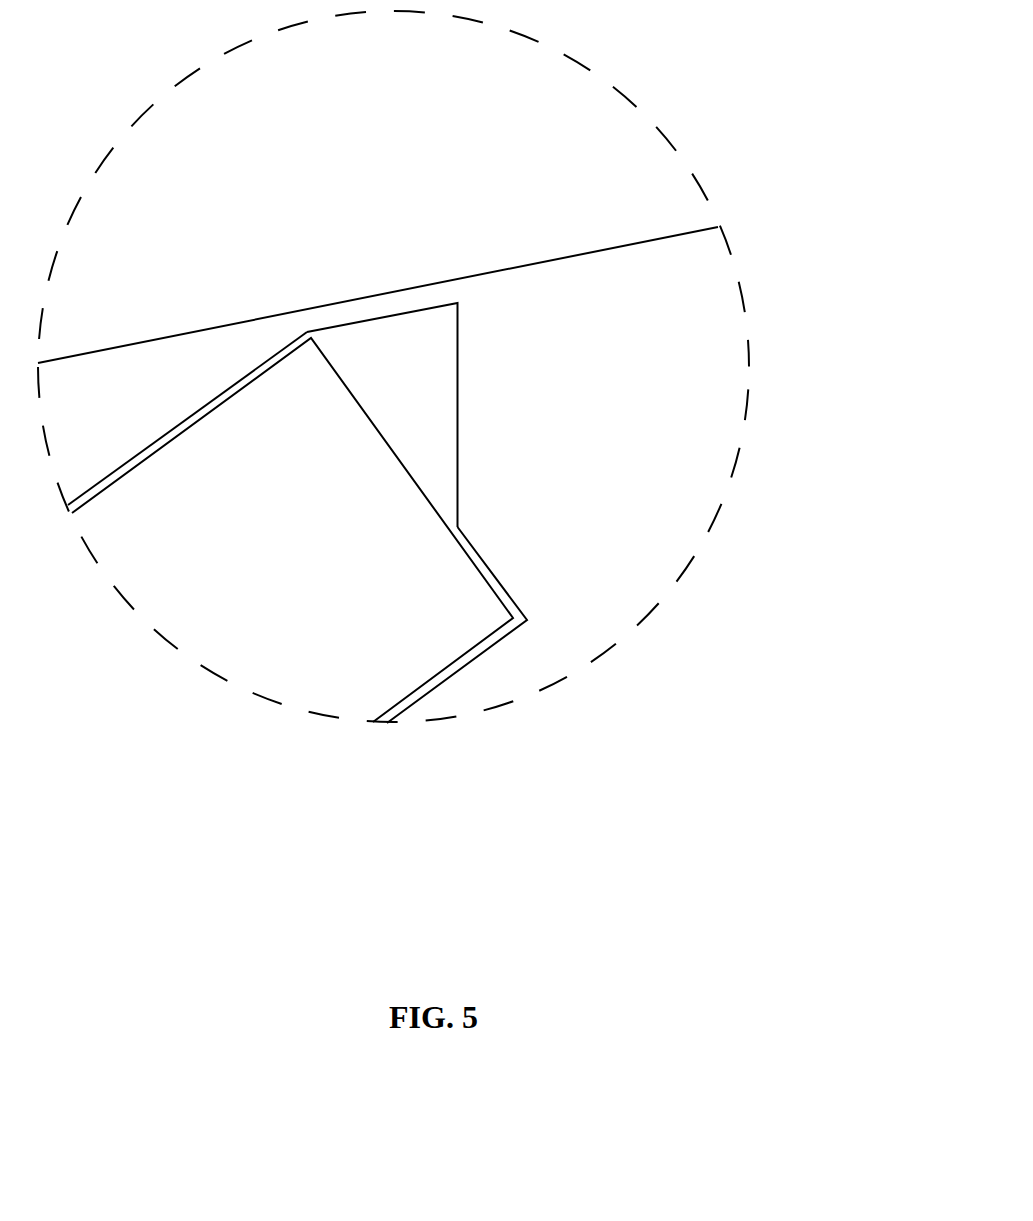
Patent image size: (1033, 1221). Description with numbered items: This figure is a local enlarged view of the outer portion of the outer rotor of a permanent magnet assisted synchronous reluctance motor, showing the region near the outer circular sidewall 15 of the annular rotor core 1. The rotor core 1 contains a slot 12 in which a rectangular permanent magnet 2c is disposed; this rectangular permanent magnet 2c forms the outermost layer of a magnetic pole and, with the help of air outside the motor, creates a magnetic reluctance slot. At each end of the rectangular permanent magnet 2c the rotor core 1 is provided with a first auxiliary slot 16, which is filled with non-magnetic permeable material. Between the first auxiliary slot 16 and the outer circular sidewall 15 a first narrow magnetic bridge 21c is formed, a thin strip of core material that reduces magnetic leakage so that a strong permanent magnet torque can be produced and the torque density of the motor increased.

The annular rotor core 1 is at (640, 544).
The rectangular permanent magnet 2c is at (258, 504).
The slot 12 is at (465, 666).
The outer circular sidewall 15 is at (617, 246).
The first auxiliary slot 16 is at (418, 370).
The first narrow magnetic bridge 21c is at (385, 300).